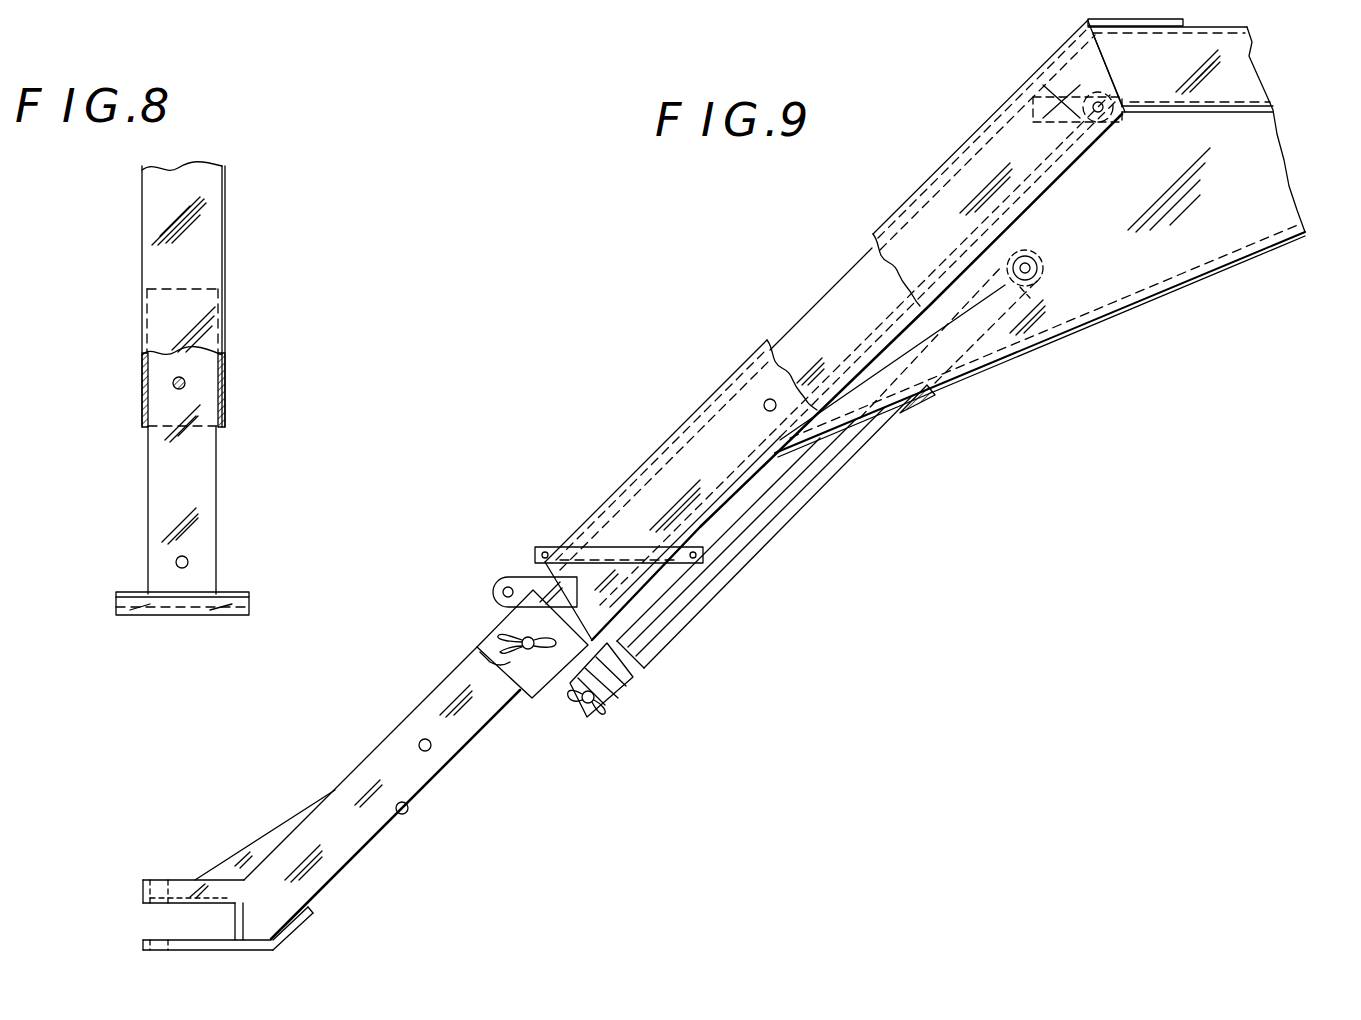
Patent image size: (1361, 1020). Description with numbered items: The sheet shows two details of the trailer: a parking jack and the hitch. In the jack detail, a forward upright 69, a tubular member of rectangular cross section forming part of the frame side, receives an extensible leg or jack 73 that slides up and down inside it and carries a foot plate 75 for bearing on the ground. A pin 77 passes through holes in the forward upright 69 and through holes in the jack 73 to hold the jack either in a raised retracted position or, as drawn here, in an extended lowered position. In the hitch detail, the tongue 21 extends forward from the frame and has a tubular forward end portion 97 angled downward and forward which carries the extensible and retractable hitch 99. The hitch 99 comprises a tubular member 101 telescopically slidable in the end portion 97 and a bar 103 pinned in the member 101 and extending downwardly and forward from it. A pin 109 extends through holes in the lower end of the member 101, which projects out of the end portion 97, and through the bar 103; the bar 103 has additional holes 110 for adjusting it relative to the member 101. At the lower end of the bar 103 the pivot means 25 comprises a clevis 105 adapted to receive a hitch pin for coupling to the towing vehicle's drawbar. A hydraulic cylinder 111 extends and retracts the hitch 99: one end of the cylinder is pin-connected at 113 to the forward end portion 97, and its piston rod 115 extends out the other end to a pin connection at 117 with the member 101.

In FIG. 9, the tongue 21 is at (1040, 46).
In FIG. 9, the pivot means 25 is at (207, 840).
In FIG. 8, the forward upright 69 is at (142, 270).
In FIG. 8, the extensible leg or jack 73 is at (200, 458).
In FIG. 8, the foot plate 75 is at (245, 603).
In FIG. 8, the pin 77 is at (173, 383).
In FIG. 9, the tubular forward end portion 97 is at (853, 262).
In FIG. 9, the hitch 99 is at (422, 690).
In FIG. 9, the tubular member 101 is at (847, 314).
In FIG. 9, the bar 103 is at (342, 785).
In FIG. 9, the clevis 105 is at (148, 880).
In FIG. 9, the pin 109 is at (502, 634).
In FIG. 9, the additional holes 110 is at (430, 752).
In FIG. 9, the hydraulic cylinder 111 is at (783, 530).
In FIG. 9, the pin connection 113 is at (1040, 268).
In FIG. 9, the piston rod 115 is at (637, 657).
In FIG. 9, the pin connection 117 is at (568, 708).